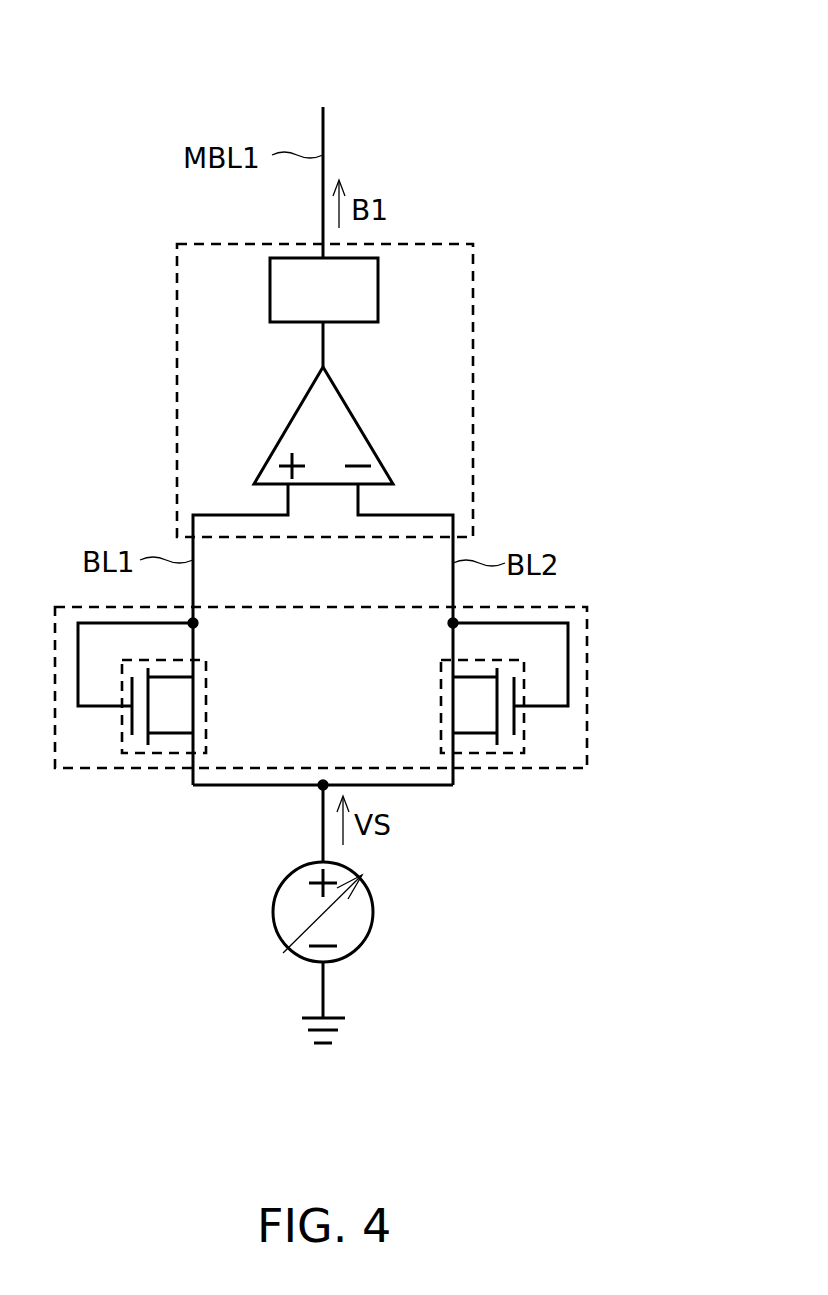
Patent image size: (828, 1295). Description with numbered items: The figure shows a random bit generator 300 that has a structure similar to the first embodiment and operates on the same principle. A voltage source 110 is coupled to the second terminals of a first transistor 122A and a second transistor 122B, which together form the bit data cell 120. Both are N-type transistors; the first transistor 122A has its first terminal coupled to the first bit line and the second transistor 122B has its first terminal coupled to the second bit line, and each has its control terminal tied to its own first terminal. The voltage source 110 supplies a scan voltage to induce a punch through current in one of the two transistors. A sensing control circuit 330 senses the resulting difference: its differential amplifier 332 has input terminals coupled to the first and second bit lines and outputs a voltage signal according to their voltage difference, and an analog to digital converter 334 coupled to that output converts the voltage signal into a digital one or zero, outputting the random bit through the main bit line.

The random bit generator 300 is at (487, 108).
The sensing control circuit 330 is at (473, 390).
The analog to digital converter 334 is at (350, 308).
The differential amplifier 332 is at (357, 421).
The bit data cell 120 is at (587, 686).
The first transistor 122A is at (206, 683).
The second transistor 122B is at (441, 731).
The voltage source 110 is at (373, 912).